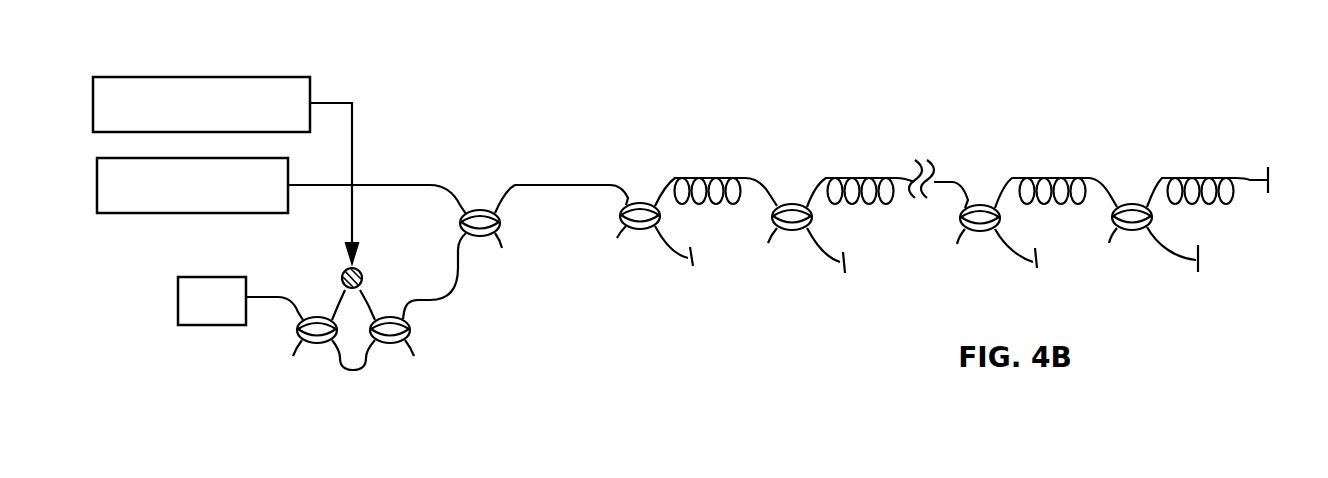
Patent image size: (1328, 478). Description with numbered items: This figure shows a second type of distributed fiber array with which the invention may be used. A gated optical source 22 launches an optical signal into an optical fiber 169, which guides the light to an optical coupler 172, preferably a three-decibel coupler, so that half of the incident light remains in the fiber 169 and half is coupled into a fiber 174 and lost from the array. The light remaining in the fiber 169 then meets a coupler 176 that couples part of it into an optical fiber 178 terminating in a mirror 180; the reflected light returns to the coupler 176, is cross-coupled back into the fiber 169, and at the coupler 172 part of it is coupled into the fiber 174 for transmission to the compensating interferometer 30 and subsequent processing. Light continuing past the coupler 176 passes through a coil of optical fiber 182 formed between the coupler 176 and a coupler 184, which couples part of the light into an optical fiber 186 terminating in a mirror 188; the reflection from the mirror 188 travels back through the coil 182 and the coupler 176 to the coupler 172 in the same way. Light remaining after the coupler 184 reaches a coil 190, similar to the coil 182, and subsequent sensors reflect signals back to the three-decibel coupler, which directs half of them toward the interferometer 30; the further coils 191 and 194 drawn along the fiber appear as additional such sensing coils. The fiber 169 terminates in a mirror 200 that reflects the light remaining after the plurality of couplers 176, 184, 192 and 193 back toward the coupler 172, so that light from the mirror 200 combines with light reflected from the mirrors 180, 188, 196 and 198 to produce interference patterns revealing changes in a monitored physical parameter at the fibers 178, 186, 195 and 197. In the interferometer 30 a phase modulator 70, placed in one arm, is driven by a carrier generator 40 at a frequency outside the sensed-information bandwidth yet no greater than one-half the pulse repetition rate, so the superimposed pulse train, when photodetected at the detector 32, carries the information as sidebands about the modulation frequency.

The gated optical source 22 is at (135, 215).
The compensating interferometer 30 is at (378, 365).
The detector 32 is at (248, 283).
The carrier generator 40 is at (177, 77).
The phase modulator 70 is at (357, 266).
The optical fiber 169 is at (412, 185).
The optical coupler 172 is at (500, 226).
The optical fiber 174 is at (458, 276).
The optical coupler 176 is at (640, 203).
The optical fiber 178 is at (638, 228).
The mirror 180 is at (694, 262).
The coil of optical fiber 182 is at (712, 176).
The optical coupler 184 is at (792, 205).
The optical fiber 186 is at (795, 232).
The mirror 188 is at (845, 270).
The coil 190 is at (865, 176).
The sensor fiber coil 191 is at (1055, 176).
The optical coupler 192 is at (985, 206).
The optical coupler 193 is at (1121, 165).
The sensor fiber coil 194 is at (1210, 157).
The optical fiber 195 is at (983, 232).
The mirror 196 is at (1037, 265).
The optical fiber 197 is at (1135, 232).
The mirror 198 is at (1201, 248).
The mirror 200 is at (1270, 172).